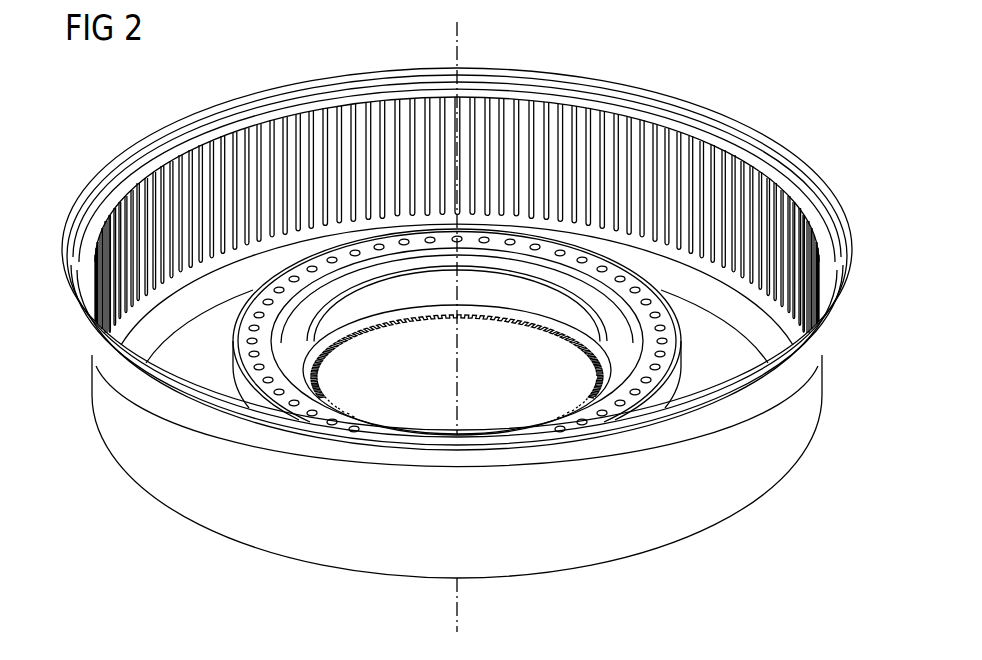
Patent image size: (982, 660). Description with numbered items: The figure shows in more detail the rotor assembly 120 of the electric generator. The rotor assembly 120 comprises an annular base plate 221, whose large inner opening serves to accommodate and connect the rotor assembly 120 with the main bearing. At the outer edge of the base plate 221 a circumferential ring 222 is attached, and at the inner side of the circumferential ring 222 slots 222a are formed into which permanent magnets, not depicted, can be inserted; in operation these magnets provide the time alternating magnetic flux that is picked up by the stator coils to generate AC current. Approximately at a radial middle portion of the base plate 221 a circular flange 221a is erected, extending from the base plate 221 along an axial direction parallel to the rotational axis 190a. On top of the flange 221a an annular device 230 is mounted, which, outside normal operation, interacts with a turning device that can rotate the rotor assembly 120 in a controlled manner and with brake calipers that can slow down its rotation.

The rotor assembly 120 is at (745, 90).
The circumferential ring 222 is at (588, 523).
The slots 222a is at (493, 98).
The annular base plate 221 is at (733, 365).
The circular flange 221a is at (240, 395).
The annular device 230 is at (647, 382).
The rotational axis 190a is at (462, 600).